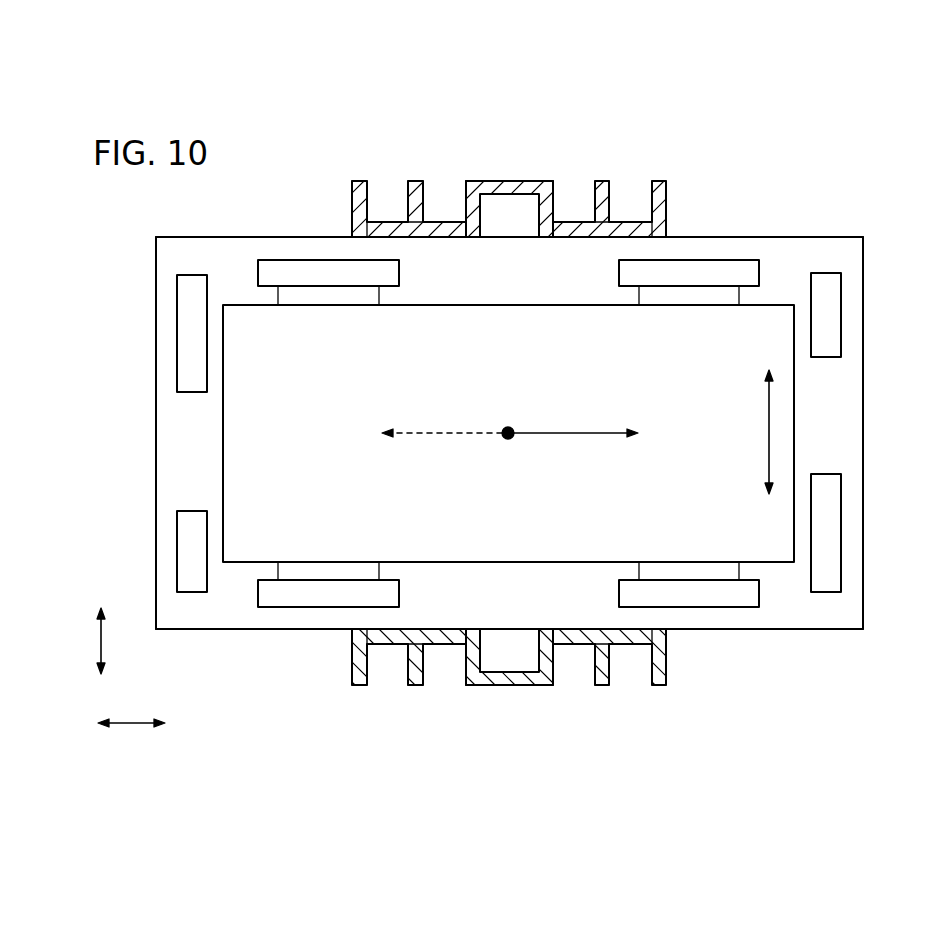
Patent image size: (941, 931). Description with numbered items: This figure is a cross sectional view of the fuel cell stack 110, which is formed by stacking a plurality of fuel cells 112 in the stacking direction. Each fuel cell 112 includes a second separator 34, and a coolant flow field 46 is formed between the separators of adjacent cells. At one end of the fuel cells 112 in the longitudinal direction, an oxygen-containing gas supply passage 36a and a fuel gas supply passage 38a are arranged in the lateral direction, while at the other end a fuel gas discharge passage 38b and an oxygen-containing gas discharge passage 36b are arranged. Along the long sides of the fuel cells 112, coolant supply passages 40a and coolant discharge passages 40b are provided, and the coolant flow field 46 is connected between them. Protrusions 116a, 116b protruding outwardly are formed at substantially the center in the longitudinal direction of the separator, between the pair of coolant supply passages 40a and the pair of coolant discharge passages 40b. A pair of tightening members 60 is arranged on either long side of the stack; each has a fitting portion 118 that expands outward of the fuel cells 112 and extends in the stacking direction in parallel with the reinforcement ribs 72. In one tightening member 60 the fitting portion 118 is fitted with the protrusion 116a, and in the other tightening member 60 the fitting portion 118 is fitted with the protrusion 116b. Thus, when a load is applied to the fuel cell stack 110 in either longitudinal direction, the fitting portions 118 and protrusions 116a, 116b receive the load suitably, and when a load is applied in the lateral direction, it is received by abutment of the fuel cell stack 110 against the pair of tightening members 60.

The fuel cell stack 110 is at (826, 152).
The fuel cells 112 is at (829, 228).
The second separator 34 is at (794, 636).
The coolant flow field 46 is at (546, 552).
The oxygen-containing gas supply passage 36a is at (826, 532).
The oxygen-containing gas discharge passage 36b is at (190, 318).
The fuel gas supply passage 38a is at (826, 318).
The fuel gas discharge passage 38b is at (190, 531).
The coolant supply passage 40a is at (323, 277).
The coolant discharge passage 40b is at (323, 588).
The tightening members 60 is at (678, 184).
The reinforcement ribs 72 is at (362, 192).
The fitting portion 118 is at (551, 198).
The protrusion 116a is at (500, 208).
The protrusion 116b is at (506, 655).